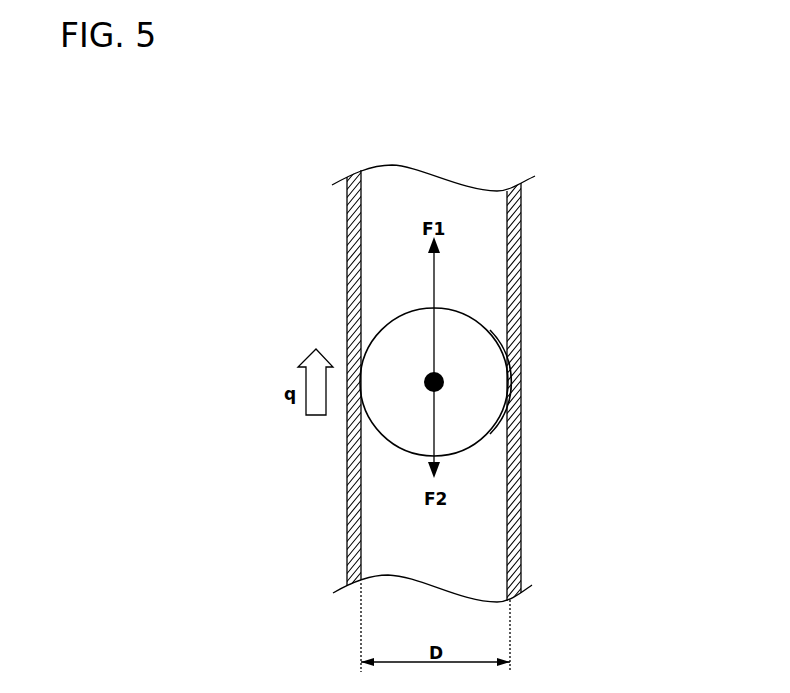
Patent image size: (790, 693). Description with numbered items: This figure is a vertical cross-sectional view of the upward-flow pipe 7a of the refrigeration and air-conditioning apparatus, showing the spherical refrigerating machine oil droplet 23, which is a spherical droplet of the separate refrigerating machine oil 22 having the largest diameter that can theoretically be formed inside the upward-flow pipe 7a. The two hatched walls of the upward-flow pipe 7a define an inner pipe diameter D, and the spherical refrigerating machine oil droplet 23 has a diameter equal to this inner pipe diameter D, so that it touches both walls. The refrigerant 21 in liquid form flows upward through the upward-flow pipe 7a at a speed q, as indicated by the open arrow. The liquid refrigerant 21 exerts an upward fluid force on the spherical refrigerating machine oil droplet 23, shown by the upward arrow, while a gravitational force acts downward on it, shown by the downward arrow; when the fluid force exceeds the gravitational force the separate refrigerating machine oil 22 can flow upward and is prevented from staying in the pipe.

The refrigerant in liquid form 21 is at (482, 278).
The separate refrigerating machine oil 22 is at (478, 413).
The spherical refrigerating machine oil droplet 23 is at (483, 355).
The upward-flow pipe 7a is at (349, 483).